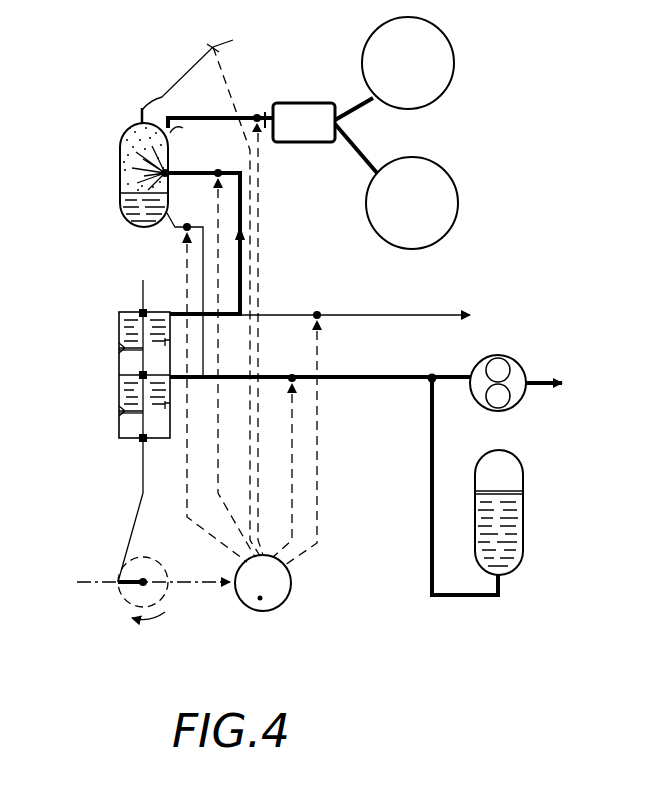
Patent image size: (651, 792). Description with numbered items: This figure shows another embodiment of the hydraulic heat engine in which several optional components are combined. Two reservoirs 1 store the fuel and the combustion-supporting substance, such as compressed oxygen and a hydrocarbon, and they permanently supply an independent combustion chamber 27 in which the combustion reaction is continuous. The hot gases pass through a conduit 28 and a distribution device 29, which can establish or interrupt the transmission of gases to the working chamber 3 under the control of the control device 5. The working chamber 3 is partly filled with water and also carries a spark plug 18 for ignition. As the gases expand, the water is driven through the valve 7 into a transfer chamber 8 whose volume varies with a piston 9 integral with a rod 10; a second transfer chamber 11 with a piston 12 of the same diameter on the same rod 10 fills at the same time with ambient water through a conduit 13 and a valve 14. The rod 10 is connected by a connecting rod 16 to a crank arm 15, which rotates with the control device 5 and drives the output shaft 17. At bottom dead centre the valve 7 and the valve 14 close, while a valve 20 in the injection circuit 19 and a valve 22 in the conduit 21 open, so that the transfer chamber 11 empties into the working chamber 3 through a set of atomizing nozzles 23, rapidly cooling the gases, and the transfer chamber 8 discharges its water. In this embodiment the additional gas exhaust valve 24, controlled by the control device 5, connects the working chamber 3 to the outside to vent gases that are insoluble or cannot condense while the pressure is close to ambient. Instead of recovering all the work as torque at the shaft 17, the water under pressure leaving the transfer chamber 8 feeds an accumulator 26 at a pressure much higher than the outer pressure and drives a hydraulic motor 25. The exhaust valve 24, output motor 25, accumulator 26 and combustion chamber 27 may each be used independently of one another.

The reservoirs 1 is at (433, 47).
The working chamber 3 is at (118, 160).
The control device 5 is at (263, 583).
The valve 7 is at (187, 224).
The transfer chamber 8 is at (128, 395).
The piston 9 is at (130, 410).
The rod 10 is at (142, 470).
The transfer chamber 11 is at (128, 328).
The piston 12 is at (130, 347).
The conduit 13 is at (285, 302).
The valve 14 is at (320, 311).
The crank arm 15 is at (130, 580).
The connecting rod 16 is at (135, 518).
The output shaft 17 is at (88, 572).
The spark plug 18 is at (146, 117).
The injection circuit 19 is at (243, 210).
The valve 20 is at (221, 163).
The conduit 21 is at (412, 370).
The valve 22 is at (300, 366).
The nozzles 23 is at (176, 163).
The additional valve 24 is at (201, 279).
The motor 25 is at (528, 357).
The accumulator 26 is at (522, 527).
The combustion chamber 27 is at (310, 104).
The conduit 28 is at (270, 133).
The distribution device 29 is at (257, 114).